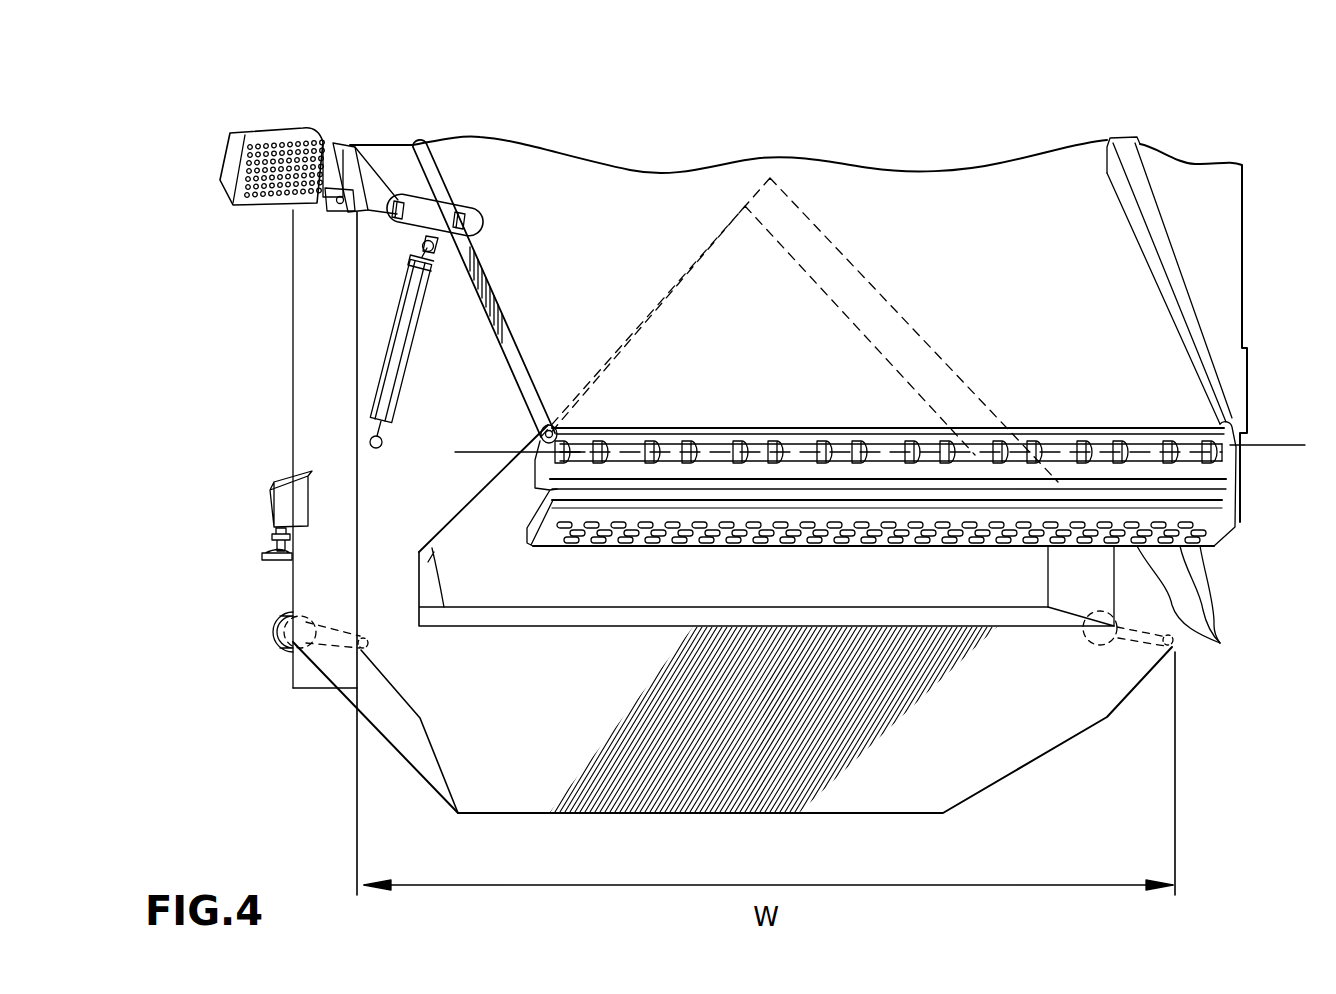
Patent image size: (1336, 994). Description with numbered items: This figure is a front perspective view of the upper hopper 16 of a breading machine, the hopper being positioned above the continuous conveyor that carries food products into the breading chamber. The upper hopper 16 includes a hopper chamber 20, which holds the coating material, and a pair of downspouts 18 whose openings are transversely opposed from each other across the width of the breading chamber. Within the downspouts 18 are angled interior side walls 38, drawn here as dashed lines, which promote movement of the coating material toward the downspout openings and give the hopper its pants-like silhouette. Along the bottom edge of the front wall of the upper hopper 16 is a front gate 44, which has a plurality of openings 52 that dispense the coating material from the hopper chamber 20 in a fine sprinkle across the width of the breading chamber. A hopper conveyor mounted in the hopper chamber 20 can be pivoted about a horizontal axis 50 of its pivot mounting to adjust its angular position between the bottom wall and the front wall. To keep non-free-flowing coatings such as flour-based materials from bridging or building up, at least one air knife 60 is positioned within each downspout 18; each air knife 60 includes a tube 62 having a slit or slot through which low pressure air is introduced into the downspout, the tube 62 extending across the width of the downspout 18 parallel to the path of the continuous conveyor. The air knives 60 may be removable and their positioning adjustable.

The upper hopper 16 is at (1203, 136).
The downspout 18 is at (290, 585).
The hopper chamber 20 is at (1120, 327).
The angled interior side walls 38 is at (640, 317).
The front gate 44 is at (1223, 530).
The horizontal axis 50 is at (484, 450).
The openings 52 is at (1208, 628).
The air knife 60 is at (255, 657).
The tube 62 is at (334, 642).